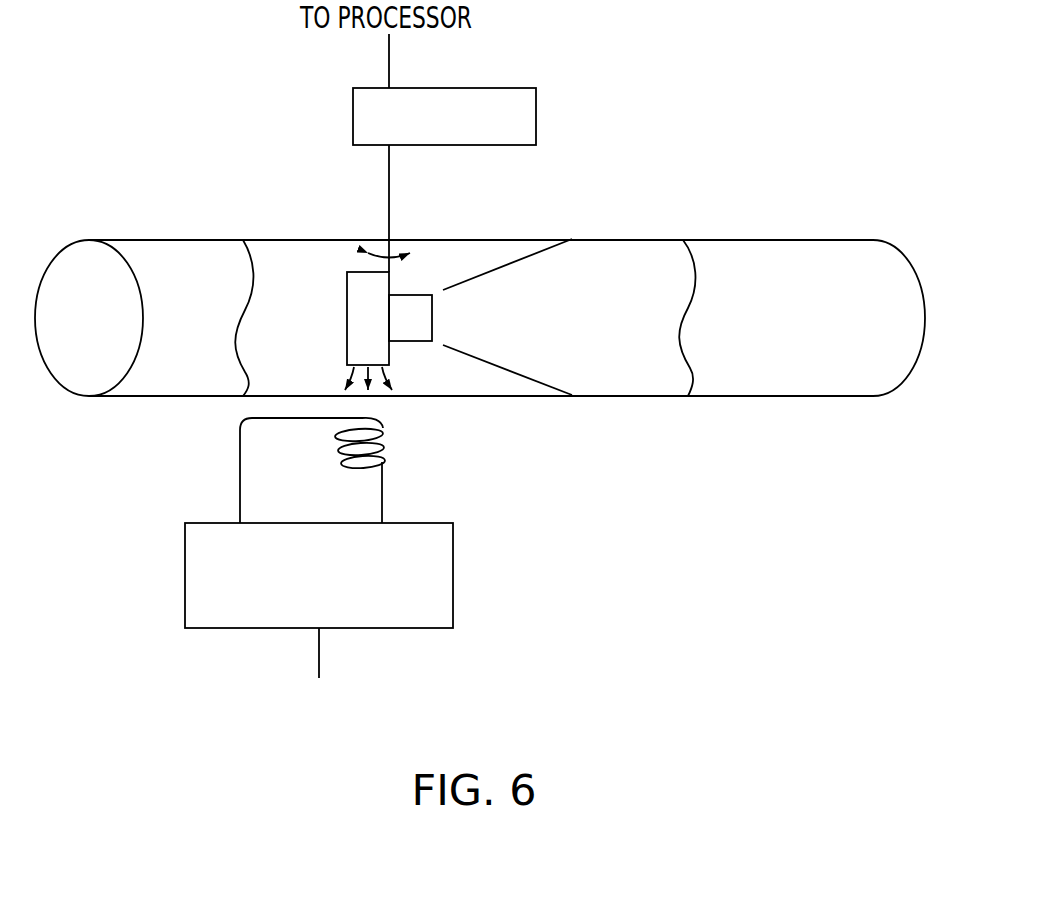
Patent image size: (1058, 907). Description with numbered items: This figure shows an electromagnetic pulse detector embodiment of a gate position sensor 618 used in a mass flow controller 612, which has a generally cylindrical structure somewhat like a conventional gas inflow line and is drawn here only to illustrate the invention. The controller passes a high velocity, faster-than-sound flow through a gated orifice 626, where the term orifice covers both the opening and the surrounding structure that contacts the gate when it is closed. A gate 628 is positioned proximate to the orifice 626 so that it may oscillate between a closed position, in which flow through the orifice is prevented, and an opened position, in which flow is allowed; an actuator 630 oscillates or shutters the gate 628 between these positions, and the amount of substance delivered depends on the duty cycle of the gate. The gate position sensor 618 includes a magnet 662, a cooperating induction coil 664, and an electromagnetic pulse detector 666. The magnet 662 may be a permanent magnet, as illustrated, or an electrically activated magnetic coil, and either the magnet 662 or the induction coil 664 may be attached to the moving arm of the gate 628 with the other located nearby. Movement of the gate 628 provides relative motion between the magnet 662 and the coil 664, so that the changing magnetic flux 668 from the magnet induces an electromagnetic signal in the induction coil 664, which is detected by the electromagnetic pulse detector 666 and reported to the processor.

The mass flow controller 612 is at (480, 243).
The gate position sensor 618 is at (298, 574).
The orifice 626 is at (507, 369).
The gate 628 is at (433, 318).
The actuator 630 is at (483, 88).
The magnet 662 is at (347, 318).
The induction coil 664 is at (408, 462).
The electromagnetic pulse detector 666 is at (455, 576).
The magnetic flux 668 is at (817, 333).